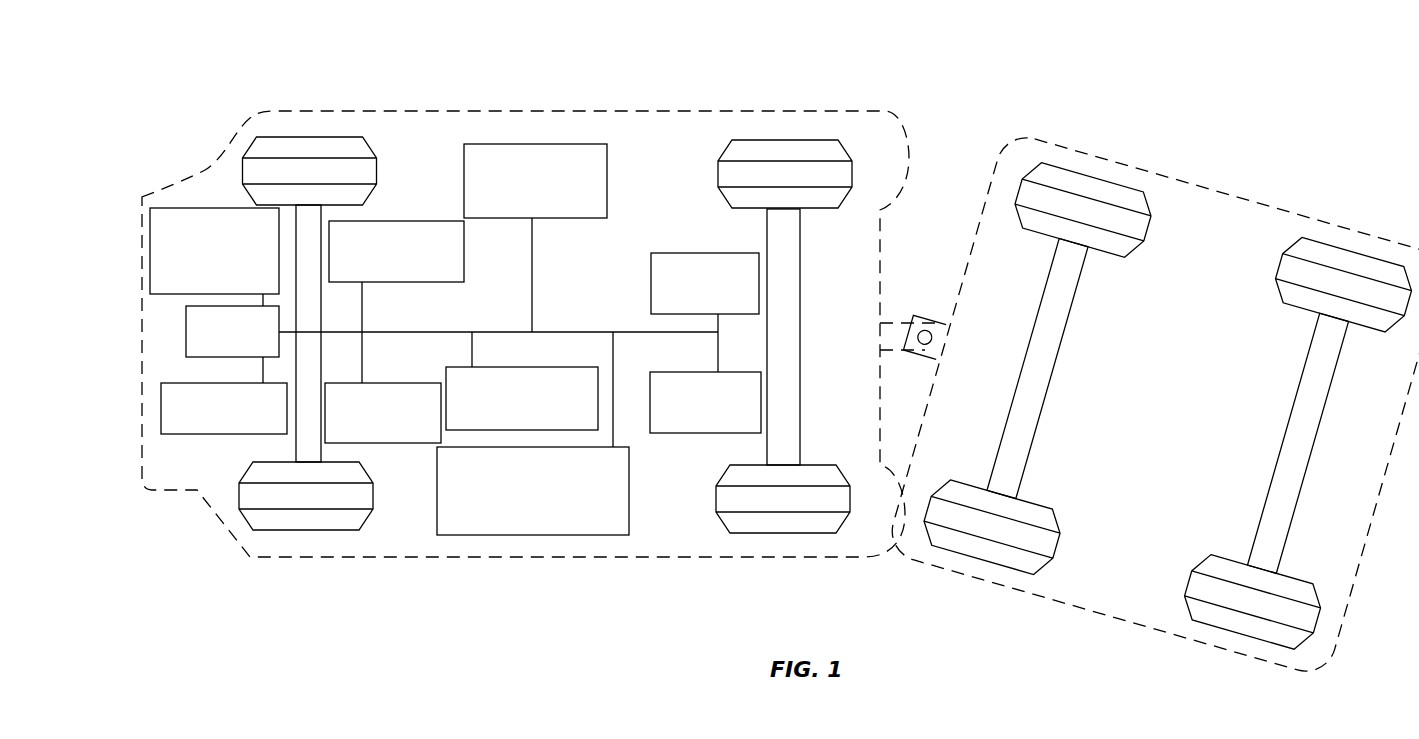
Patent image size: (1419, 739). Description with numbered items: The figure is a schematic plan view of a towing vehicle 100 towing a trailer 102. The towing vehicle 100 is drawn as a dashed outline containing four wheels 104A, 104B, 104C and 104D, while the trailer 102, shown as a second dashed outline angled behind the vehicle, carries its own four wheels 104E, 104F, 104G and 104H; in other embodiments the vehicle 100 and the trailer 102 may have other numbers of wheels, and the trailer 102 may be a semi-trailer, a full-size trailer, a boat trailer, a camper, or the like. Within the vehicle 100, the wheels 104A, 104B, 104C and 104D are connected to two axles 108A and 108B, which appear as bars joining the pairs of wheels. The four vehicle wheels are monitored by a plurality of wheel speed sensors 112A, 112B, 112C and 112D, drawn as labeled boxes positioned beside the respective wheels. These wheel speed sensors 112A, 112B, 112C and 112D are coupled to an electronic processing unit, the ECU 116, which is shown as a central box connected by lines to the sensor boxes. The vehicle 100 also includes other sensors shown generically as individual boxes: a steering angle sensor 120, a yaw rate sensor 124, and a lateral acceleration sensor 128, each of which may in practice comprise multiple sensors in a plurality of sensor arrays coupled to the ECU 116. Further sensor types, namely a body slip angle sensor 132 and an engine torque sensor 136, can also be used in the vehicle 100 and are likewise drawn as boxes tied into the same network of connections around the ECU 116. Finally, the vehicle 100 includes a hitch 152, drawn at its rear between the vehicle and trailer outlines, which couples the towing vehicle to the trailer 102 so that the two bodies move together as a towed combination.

The towing vehicle 100 is at (562, 110).
The trailer 102 is at (1230, 187).
The wheel 104A is at (307, 136).
The wheel 104B is at (797, 140).
The wheel 104C is at (300, 531).
The wheel 104D is at (790, 533).
The wheel 104E is at (1118, 257).
The wheel 104F is at (1280, 303).
The wheel 104G is at (1218, 553).
The wheel 104H is at (1052, 508).
The axle 108A is at (293, 442).
The axle 108B is at (802, 348).
The wheel speed sensor 112A is at (397, 221).
The wheel speed sensor 112B is at (707, 253).
The wheel speed sensor 112C is at (383, 443).
The wheel speed sensor 112D is at (713, 433).
The electronic processing unit (ECU) 116 is at (279, 323).
The steering angle sensor 120 is at (149, 252).
The yaw rate sensor 124 is at (532, 142).
The lateral acceleration sensor 128 is at (530, 535).
The body slip angle sensor 132 is at (532, 362).
The engine torque sensor 136 is at (160, 408).
The hitch 152 is at (913, 330).